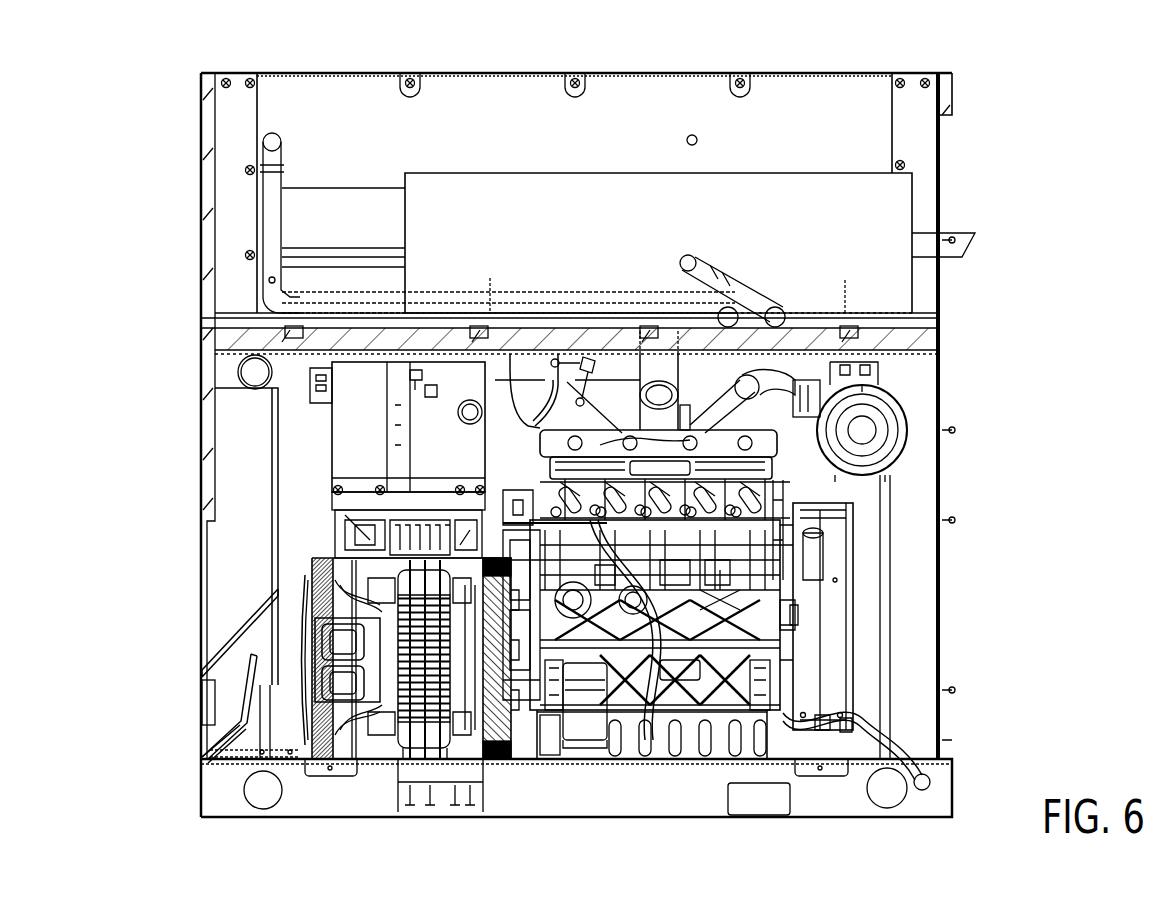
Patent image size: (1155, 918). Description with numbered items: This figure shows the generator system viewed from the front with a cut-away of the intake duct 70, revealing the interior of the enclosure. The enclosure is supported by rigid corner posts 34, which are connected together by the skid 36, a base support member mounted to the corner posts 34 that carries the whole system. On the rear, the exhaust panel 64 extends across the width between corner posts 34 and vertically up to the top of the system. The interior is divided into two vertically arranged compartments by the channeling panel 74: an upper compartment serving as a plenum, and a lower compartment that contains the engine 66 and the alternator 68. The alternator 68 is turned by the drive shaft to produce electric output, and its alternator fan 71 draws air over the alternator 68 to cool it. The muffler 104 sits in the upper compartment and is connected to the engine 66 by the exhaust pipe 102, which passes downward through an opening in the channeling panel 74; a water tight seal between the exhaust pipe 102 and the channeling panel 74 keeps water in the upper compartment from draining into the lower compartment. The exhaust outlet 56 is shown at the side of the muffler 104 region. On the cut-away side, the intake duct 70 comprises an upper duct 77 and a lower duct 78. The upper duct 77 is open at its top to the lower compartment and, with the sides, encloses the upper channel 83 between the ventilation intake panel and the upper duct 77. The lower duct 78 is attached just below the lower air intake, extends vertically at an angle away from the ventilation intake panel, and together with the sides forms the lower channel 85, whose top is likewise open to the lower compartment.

The corner post 34 is at (922, 648).
The skid 36 is at (930, 800).
The exhaust outlet 56 is at (950, 250).
The exhaust panel 64 is at (337, 95).
The engine 66 is at (700, 673).
The alternator 68 is at (485, 715).
The intake duct 70 is at (186, 554).
The alternator fan 71 is at (357, 730).
The channeling panel 74 is at (241, 301).
The upper duct 77 is at (270, 440).
The lower duct 78 is at (243, 690).
The upper channel 83 is at (232, 590).
The lower channel 85 is at (203, 740).
The exhaust pipe 102 is at (543, 355).
The muffler 104 is at (887, 220).